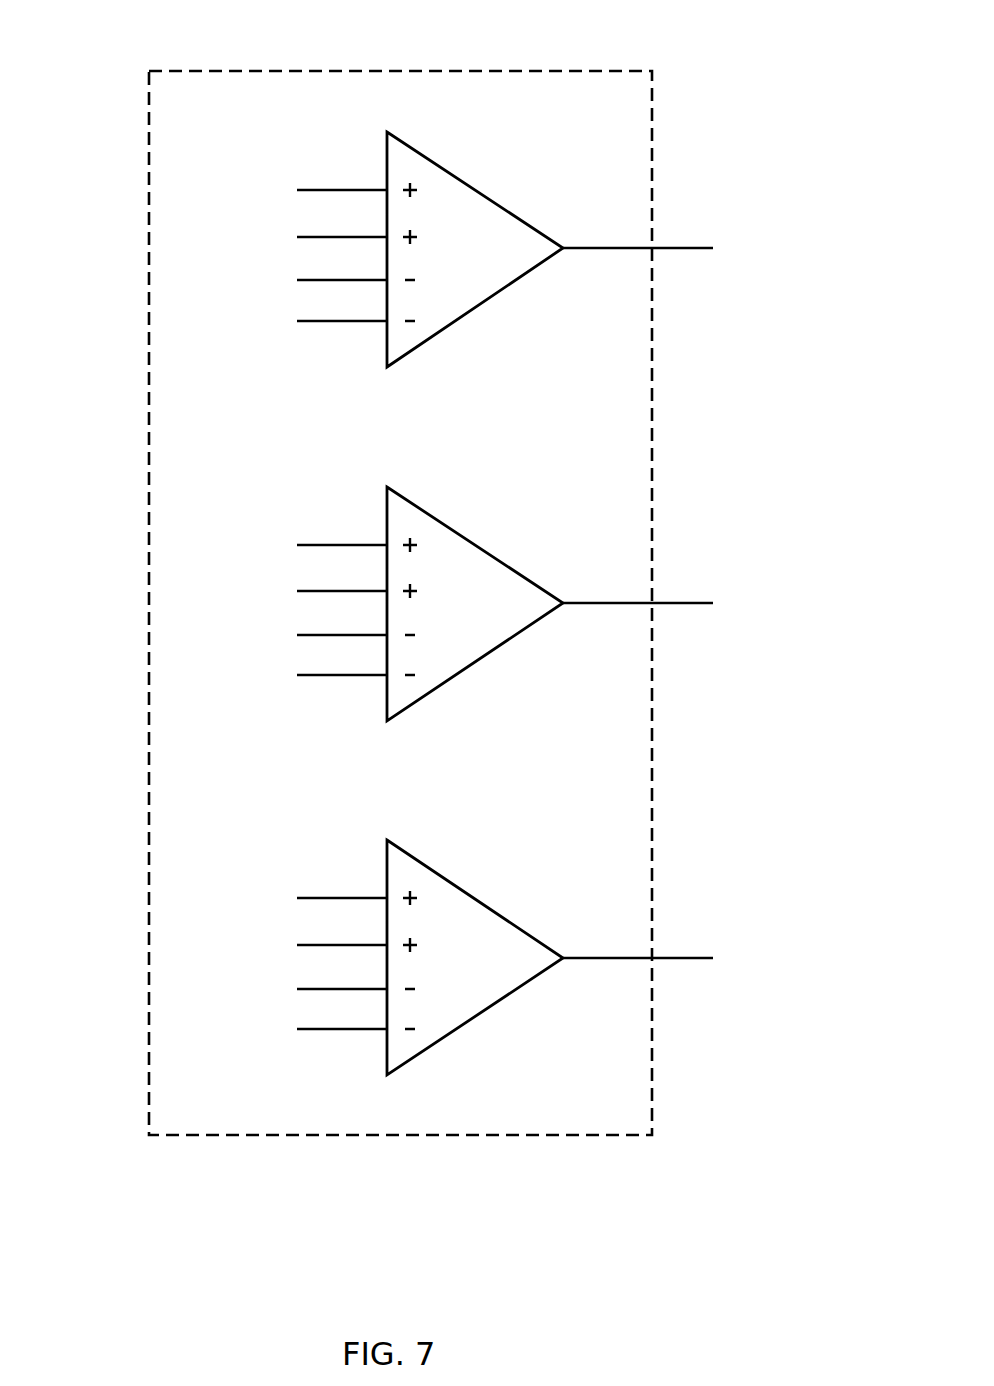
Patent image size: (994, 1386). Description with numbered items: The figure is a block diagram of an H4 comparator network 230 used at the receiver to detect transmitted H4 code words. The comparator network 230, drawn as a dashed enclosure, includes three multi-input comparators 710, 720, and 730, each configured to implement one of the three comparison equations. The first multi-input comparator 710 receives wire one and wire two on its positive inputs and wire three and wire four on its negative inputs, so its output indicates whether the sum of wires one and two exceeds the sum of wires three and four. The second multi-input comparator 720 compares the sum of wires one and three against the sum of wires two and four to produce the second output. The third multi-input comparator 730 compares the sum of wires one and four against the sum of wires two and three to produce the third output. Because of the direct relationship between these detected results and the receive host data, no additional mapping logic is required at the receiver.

The comparator network 230 is at (208, 71).
The multi-input comparator 710 is at (475, 187).
The multi-input comparator 720 is at (475, 542).
The multi-input comparator 730 is at (475, 896).